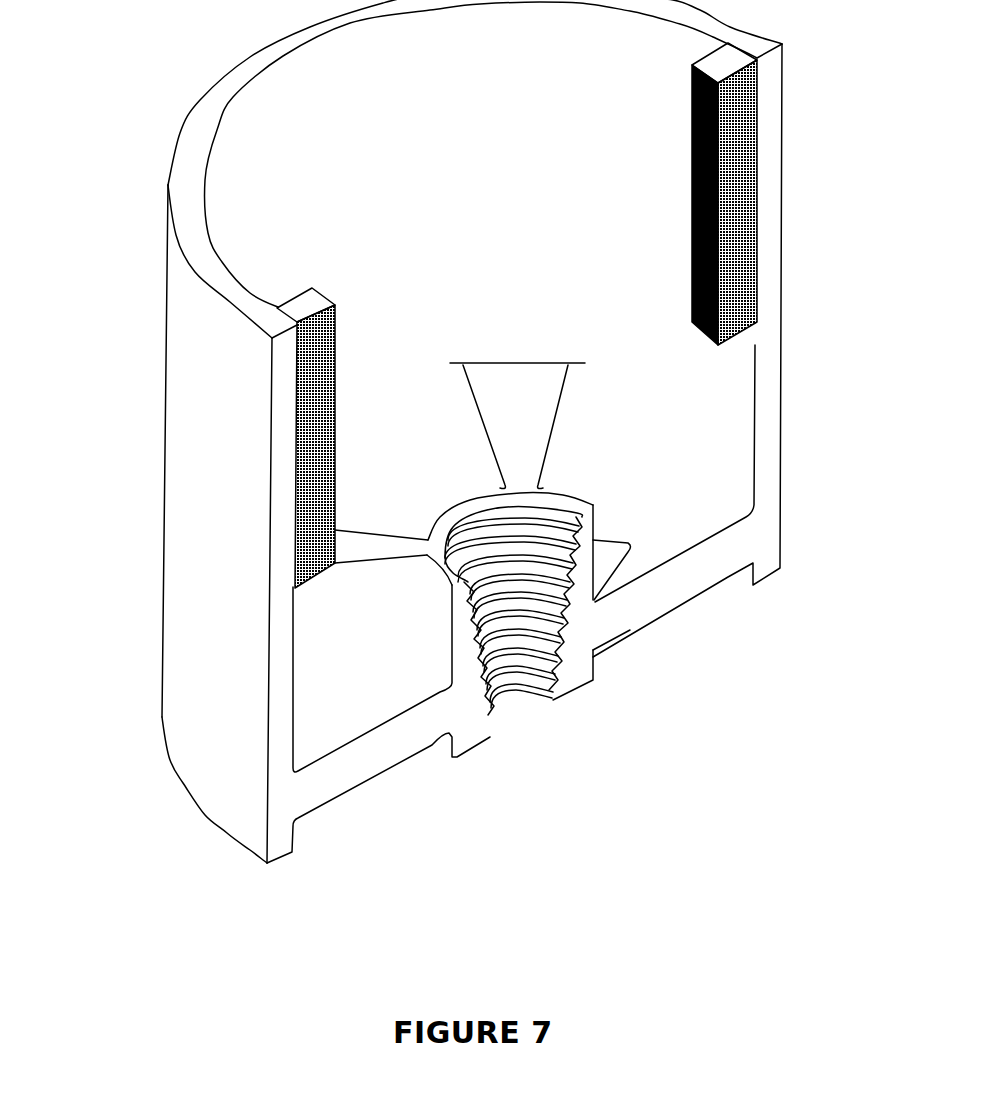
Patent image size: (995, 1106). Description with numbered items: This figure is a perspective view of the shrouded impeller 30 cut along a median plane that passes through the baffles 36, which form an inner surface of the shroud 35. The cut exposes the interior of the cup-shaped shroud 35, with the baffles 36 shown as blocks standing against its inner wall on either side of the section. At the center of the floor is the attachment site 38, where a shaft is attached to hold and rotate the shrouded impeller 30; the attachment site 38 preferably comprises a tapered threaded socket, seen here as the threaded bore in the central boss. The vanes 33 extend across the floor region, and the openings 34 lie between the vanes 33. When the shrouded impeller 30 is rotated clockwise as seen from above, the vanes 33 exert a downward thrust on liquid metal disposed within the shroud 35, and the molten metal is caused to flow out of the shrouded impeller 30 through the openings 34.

The shrouded impeller 30 is at (90, 544).
The vanes 33 is at (398, 647).
The openings 34 is at (612, 557).
The shroud 35 is at (195, 431).
The baffles 36 is at (757, 212).
The attachment site 38 is at (297, 355).